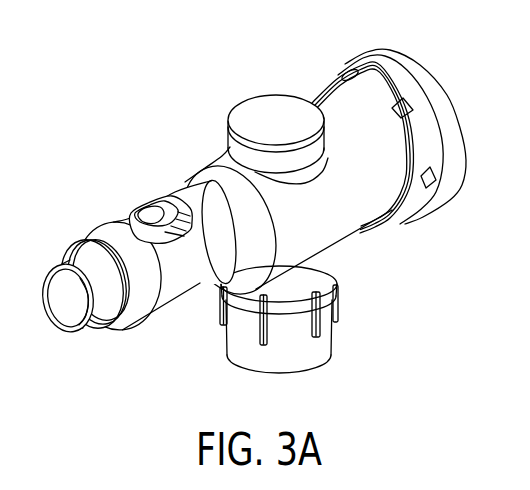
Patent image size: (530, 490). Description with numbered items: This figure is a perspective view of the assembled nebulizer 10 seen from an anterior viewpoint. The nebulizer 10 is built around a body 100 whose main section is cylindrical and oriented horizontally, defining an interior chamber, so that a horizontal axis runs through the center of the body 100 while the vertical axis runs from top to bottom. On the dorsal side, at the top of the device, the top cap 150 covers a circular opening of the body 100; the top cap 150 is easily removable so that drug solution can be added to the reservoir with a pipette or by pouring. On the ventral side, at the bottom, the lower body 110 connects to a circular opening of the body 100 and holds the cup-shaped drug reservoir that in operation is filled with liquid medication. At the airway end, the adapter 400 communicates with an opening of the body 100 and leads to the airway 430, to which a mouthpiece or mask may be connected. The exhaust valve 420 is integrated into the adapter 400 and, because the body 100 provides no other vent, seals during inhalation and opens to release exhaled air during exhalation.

The nebulizer 10 is at (254, 221).
The body 100 is at (355, 213).
The lower body 110 is at (318, 345).
The top cap 150 is at (243, 115).
The adapter 400 is at (175, 272).
The exhaust valve 420 is at (157, 202).
The airway 430 is at (79, 330).